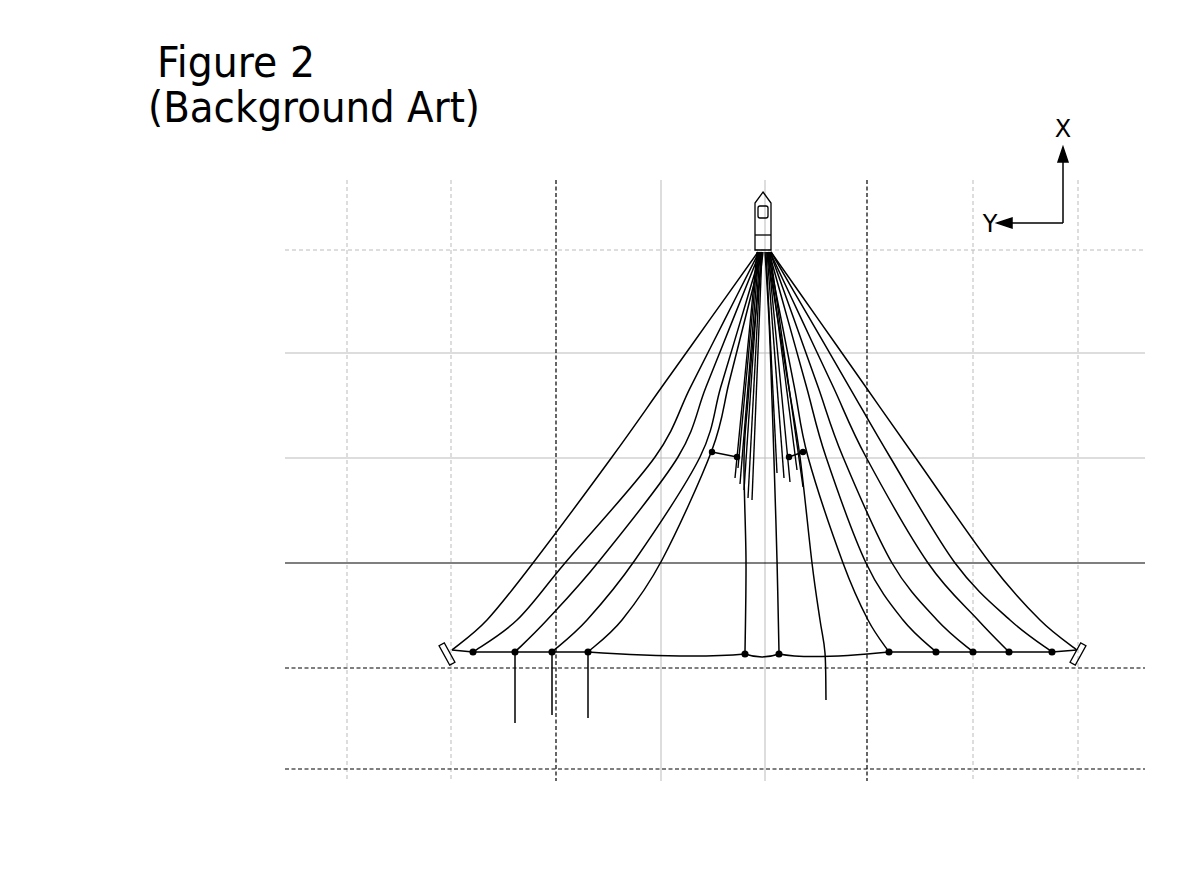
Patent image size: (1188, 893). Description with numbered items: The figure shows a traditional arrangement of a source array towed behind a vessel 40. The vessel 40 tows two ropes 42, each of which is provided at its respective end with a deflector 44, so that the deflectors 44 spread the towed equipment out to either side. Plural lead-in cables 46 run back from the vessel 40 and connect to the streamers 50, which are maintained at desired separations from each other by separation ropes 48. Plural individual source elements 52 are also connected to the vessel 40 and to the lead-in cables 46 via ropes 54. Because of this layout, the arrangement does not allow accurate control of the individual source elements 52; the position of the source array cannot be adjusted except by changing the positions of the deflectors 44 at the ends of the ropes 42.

The vessel 40 is at (802, 200).
The ropes 42 is at (630, 433).
The deflectors 44 is at (440, 651).
The lead-in cables 46 is at (941, 548).
The separation ropes 48 is at (764, 691).
The streamers 50 is at (589, 702).
The individual source elements 52 is at (776, 442).
The ropes 54 is at (801, 490).